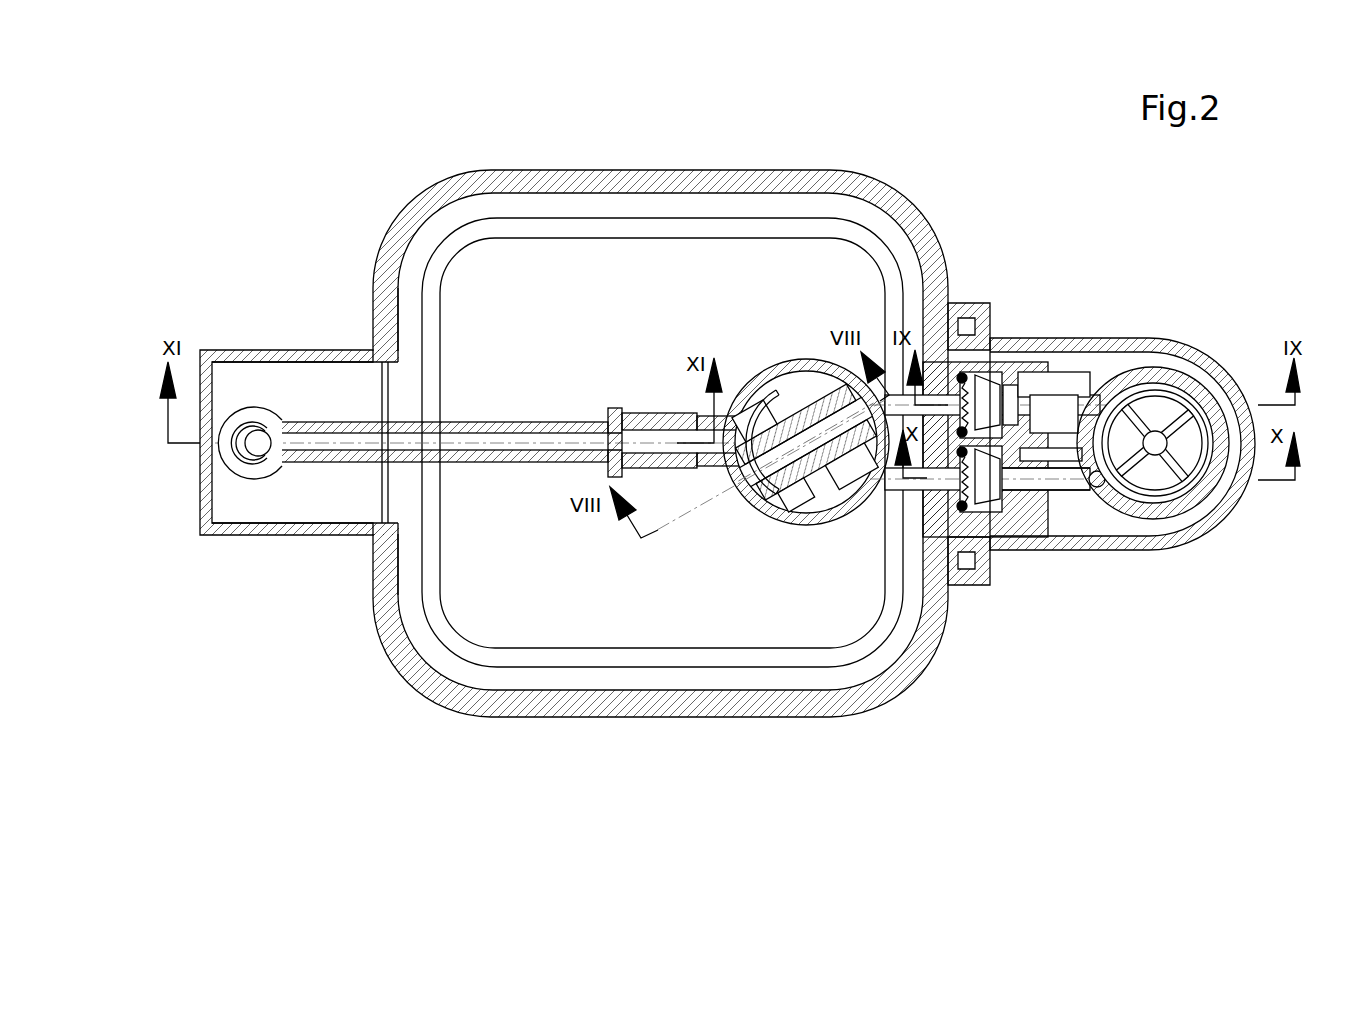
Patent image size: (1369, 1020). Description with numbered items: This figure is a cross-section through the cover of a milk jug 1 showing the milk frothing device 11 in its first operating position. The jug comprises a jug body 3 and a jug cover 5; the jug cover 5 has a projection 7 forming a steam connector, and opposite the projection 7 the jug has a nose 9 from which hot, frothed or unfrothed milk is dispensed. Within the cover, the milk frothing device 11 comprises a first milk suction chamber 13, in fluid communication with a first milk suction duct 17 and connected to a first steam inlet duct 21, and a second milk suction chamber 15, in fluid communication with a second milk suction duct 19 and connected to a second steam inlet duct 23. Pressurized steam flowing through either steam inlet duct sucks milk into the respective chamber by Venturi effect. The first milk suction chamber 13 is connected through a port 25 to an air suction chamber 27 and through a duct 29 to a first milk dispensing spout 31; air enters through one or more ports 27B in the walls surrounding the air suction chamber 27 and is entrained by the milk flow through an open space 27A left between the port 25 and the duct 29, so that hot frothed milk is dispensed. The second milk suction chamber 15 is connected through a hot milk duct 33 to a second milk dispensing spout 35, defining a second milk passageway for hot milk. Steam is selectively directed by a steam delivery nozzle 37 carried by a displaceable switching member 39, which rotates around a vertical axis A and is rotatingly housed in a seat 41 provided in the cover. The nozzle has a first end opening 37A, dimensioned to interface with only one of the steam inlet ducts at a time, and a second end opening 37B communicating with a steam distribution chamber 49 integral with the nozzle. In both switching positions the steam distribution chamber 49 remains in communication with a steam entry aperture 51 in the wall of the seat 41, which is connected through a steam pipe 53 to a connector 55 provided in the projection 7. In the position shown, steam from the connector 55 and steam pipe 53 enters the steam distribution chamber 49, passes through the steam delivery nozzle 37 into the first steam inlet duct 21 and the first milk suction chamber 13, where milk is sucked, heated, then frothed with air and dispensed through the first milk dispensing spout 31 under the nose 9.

The milk jug 1 is at (1047, 224).
The jug body 3 is at (606, 349).
The jug cover 5 is at (698, 175).
The projection 7 is at (270, 373).
The nose 9 is at (1125, 401).
The milk frothing device 11 is at (888, 540).
The first milk suction chamber 13 is at (995, 350).
The second milk suction chamber 15 is at (1003, 503).
The first milk suction duct 17 is at (1003, 440).
The second milk suction duct 19 is at (987, 508).
The first steam inlet duct 21 is at (848, 425).
The second steam inlet duct 23 is at (903, 503).
The port 25 is at (1012, 395).
The air suction chamber 27 is at (1070, 365).
The open space 27A is at (1028, 380).
The ports 27B is at (1047, 392).
The duct 29 is at (1115, 385).
The first milk dispensing spout 31 is at (1180, 395).
The hot milk duct 33 is at (1058, 490).
The second milk dispensing spout 35 is at (1097, 488).
The steam delivery nozzle 37 is at (782, 444).
The first end opening 37A is at (845, 412).
The second end opening 37B is at (748, 468).
The switching member 39 is at (764, 385).
The seat 41 is at (800, 528).
The steam distribution chamber 49 is at (760, 515).
The steam entry aperture 51 is at (705, 437).
The steam pipe 53 is at (463, 442).
The connector 55 is at (258, 456).
The vertical axis A is at (785, 434).